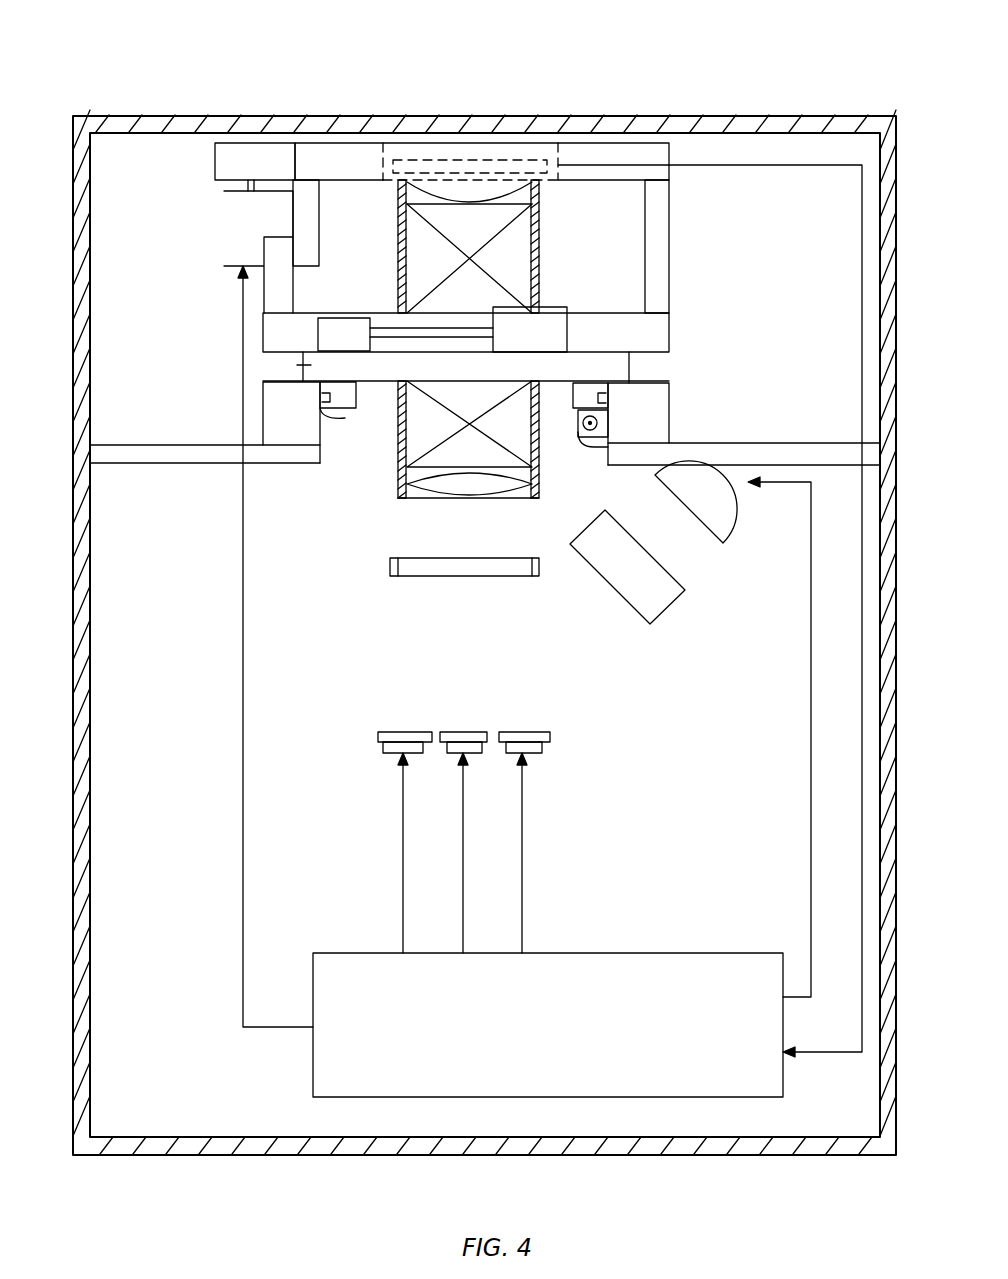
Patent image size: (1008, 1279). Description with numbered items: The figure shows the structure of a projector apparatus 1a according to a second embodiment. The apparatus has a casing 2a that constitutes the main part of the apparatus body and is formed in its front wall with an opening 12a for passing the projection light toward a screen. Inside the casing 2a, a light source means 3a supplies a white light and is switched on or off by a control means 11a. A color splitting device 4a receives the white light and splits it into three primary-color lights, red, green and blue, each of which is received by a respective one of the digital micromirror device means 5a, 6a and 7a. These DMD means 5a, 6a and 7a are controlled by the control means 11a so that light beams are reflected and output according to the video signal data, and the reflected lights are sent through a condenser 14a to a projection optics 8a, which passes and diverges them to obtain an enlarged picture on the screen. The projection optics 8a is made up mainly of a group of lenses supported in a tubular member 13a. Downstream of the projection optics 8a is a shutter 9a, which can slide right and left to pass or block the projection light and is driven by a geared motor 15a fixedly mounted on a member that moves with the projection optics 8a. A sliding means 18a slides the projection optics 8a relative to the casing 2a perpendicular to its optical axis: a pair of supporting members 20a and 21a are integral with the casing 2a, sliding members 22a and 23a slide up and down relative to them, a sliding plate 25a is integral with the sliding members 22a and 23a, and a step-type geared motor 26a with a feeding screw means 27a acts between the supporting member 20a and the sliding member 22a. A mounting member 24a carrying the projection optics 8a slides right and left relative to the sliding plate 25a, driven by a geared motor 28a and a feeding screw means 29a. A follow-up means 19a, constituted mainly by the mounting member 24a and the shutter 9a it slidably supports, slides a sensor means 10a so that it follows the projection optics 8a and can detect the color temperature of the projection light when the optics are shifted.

The projector apparatus 1a is at (513, 70).
The casing 2a is at (826, 117).
The light source means 3a is at (694, 496).
The color splitting device 4a is at (615, 574).
The digital micromirror device (DMD) means 5a is at (388, 752).
The digital micromirror device (DMD) means 6a is at (455, 750).
The digital micromirror device (DMD) means 7a is at (537, 750).
The projection optics 8a is at (487, 236).
The shutter 9a is at (257, 152).
The sensor means 10a is at (418, 150).
The control means 11a is at (665, 952).
The opening 12a is at (512, 128).
The tubular member 13a is at (398, 235).
The condenser 14a is at (388, 567).
The geared motor 15a is at (236, 226).
The sliding means 18a is at (726, 323).
The follow-up means 19a is at (698, 236).
The supporting member 20a is at (662, 433).
The supporting member 21a is at (270, 428).
The sliding member 22a is at (590, 388).
The sliding member 23a is at (325, 418).
The mounting member 24a is at (655, 140).
The sliding plate 25a is at (308, 363).
The step-type geared motor 26a is at (598, 424).
The feeding screw means 27a is at (608, 442).
The geared motor 28a is at (552, 344).
The feeding screw means 29a is at (345, 333).